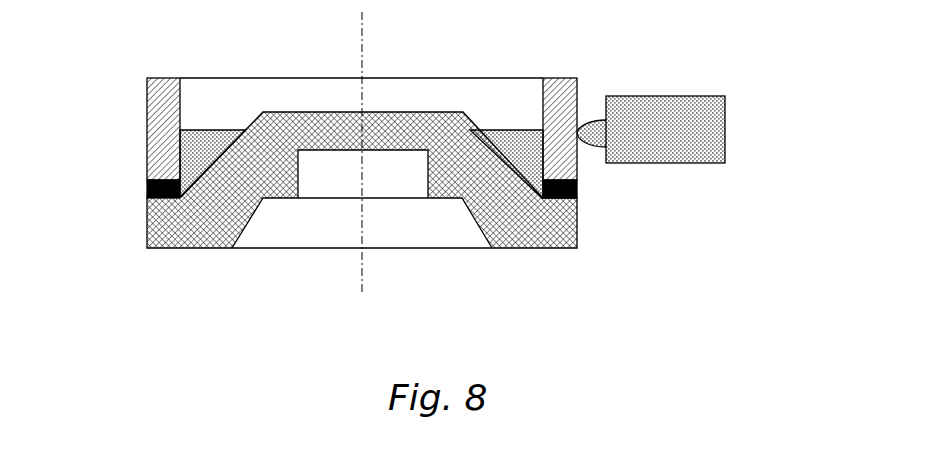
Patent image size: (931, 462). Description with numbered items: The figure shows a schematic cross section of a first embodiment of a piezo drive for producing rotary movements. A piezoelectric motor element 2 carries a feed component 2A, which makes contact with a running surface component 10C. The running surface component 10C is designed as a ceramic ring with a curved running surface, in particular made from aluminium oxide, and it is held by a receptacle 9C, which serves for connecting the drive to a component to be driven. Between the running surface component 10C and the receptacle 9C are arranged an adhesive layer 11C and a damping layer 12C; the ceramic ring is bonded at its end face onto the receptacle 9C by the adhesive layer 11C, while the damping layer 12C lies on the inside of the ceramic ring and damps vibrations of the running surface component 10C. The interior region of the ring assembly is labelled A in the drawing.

The piezoelectric motor element 2 is at (662, 102).
The feed component 2A is at (639, 163).
The receptacle 9C is at (397, 215).
The running surface component 10C is at (362, 108).
The adhesive layer 11C is at (367, 219).
The damping layer 12C is at (361, 121).
The internal cavity space A is at (416, 36).